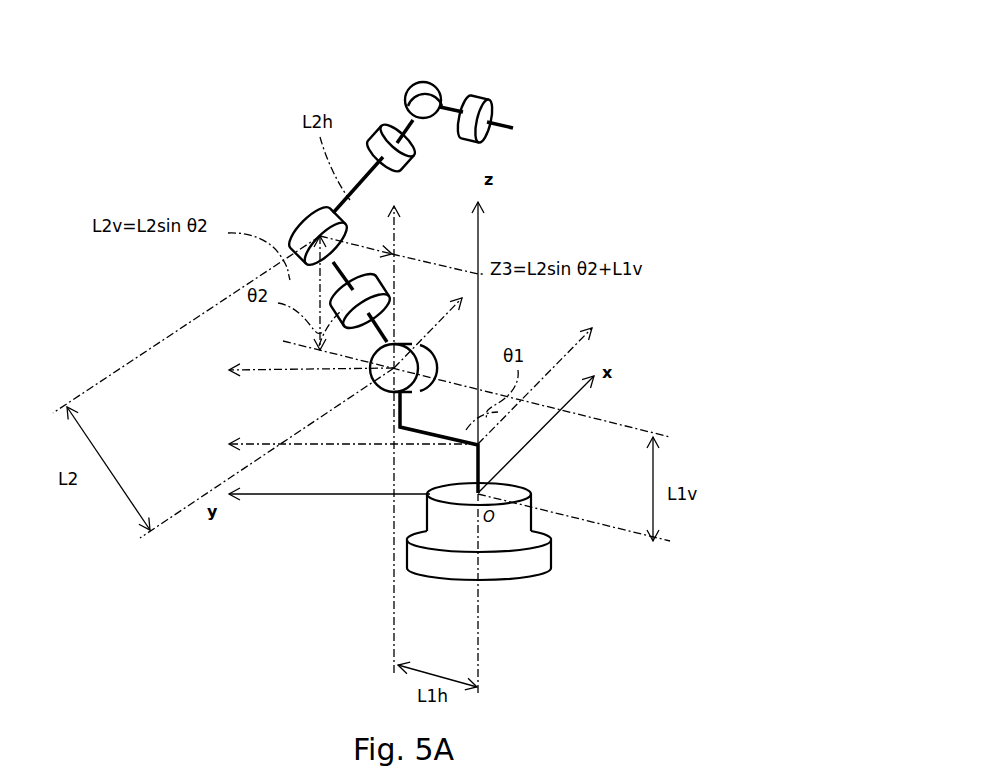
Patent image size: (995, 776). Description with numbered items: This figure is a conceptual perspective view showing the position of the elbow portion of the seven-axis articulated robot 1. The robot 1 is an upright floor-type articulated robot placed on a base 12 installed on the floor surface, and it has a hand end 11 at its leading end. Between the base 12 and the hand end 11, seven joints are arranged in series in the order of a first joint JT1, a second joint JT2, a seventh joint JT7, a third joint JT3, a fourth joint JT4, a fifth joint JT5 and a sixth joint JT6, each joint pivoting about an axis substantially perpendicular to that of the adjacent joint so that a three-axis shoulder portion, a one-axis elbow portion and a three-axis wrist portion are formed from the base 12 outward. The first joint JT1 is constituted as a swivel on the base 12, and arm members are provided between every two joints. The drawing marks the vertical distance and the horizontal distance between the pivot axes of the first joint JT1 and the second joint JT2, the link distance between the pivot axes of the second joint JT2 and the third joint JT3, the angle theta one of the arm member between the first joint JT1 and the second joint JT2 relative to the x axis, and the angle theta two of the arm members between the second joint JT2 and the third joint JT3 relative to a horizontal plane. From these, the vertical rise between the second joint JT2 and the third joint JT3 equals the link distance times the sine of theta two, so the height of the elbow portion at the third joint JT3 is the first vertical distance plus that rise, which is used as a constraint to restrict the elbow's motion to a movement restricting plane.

The seven-axis articulated robot 1 is at (204, 151).
The hand end 11 is at (513, 128).
The base 12 is at (545, 557).
The first joint JT1 is at (535, 503).
The second joint JT2 is at (382, 393).
The third joint JT3 is at (294, 214).
The fourth joint JT4 is at (377, 133).
The fifth joint JT5 is at (422, 97).
The sixth joint JT6 is at (480, 102).
The seventh joint JT7 is at (382, 290).